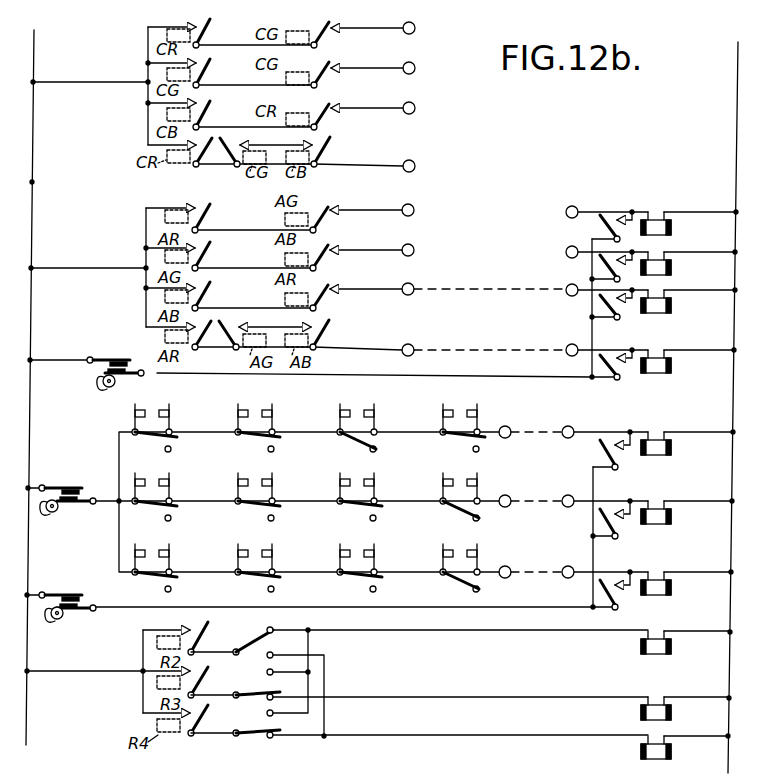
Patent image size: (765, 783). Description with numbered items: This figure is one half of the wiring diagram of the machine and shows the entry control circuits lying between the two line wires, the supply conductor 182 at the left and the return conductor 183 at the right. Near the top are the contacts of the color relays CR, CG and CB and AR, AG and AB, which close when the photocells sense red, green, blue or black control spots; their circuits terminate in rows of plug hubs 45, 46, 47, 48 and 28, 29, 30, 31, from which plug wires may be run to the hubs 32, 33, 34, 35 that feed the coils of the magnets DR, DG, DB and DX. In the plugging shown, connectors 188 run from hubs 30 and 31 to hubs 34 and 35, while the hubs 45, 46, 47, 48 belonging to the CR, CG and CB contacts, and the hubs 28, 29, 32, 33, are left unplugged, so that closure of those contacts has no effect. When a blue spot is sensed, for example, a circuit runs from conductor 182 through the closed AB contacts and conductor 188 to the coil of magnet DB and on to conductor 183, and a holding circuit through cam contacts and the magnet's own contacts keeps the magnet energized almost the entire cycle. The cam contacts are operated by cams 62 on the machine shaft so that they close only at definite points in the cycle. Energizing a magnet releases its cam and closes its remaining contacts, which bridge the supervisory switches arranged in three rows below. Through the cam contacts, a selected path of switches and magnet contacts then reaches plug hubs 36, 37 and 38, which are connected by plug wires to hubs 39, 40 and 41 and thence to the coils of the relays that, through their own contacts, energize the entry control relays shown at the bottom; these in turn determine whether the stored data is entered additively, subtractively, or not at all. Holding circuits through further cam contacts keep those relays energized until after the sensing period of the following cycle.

The line wire 182 is at (34, 182).
The line wire 183 is at (706, 407).
The conductor 188 is at (517, 291).
The cam 62 is at (100, 386).
The plug hub 28 is at (414, 208).
The plug hub 29 is at (414, 248).
The terminal 30 is at (414, 287).
The terminal 31 is at (414, 348).
The plug hub 32 is at (566, 210).
The plug hub 33 is at (566, 250).
The terminal 34 is at (566, 288).
The terminal 35 is at (566, 348).
The terminal 36 is at (511, 429).
The plug hub 37 is at (511, 498).
The plug hub 38 is at (511, 569).
The plug hub 39 is at (572, 438).
The plug hub 40 is at (572, 507).
The plug hub 41 is at (572, 578).
The terminal 45 is at (415, 26).
The terminal 46 is at (415, 66).
The terminal 47 is at (415, 106).
The terminal 48 is at (415, 164).